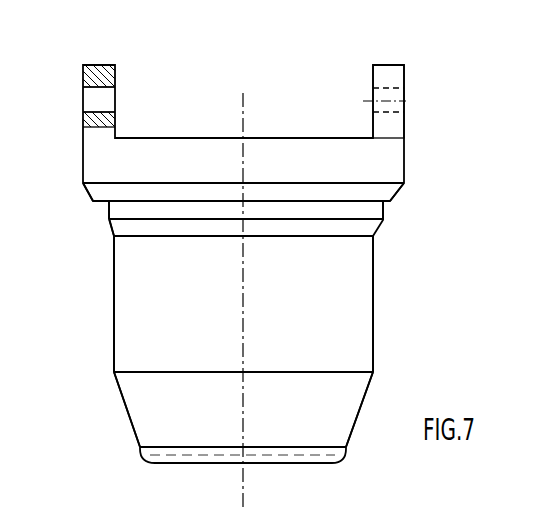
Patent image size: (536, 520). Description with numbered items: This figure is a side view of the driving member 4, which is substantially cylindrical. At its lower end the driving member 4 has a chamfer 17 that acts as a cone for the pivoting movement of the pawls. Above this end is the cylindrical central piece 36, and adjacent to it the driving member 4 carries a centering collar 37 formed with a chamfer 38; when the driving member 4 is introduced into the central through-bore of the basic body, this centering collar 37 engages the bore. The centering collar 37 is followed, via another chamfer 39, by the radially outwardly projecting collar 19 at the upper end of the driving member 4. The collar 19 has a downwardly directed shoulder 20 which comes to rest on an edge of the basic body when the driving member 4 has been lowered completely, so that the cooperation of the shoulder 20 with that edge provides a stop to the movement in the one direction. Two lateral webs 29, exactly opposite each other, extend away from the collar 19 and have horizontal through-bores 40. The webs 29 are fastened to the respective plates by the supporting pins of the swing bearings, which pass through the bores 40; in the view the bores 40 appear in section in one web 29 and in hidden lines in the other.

The driving member 4 is at (88, 294).
The chamfer 17 is at (355, 418).
The collar 19 is at (397, 178).
The shoulder 20 is at (389, 205).
The lateral webs 29 is at (92, 66).
The cylindrical central piece 36 is at (363, 302).
The centering collar 37 is at (117, 210).
The chamfer 38 is at (113, 226).
The chamfer 39 is at (86, 193).
The horizontal through-bores 40 is at (110, 99).